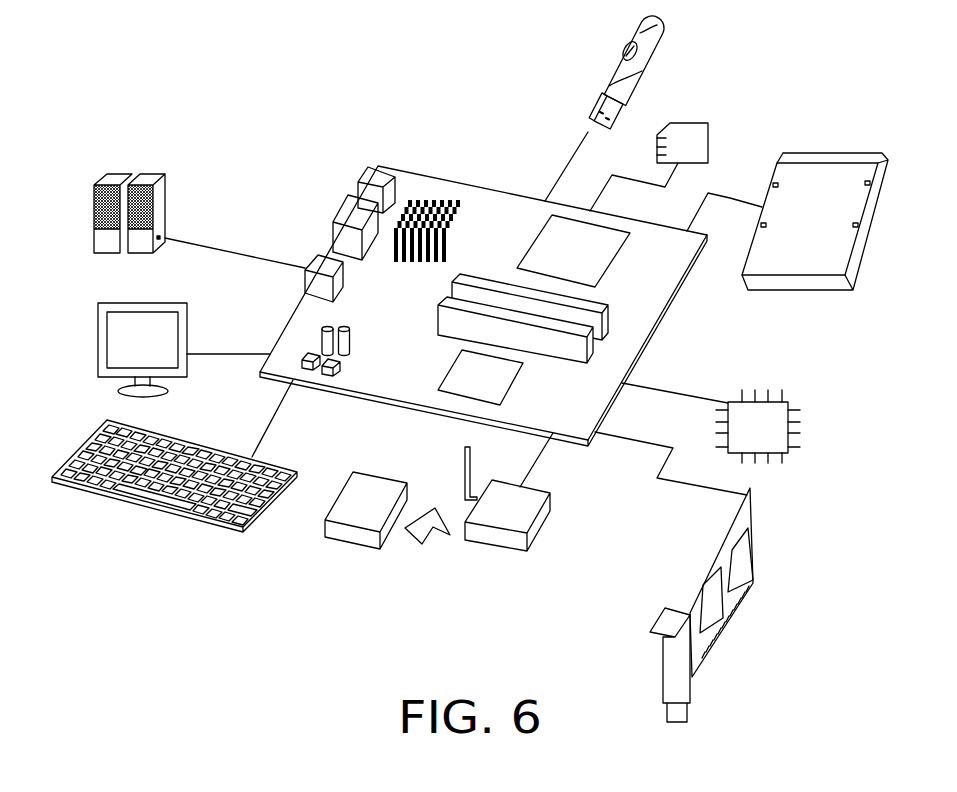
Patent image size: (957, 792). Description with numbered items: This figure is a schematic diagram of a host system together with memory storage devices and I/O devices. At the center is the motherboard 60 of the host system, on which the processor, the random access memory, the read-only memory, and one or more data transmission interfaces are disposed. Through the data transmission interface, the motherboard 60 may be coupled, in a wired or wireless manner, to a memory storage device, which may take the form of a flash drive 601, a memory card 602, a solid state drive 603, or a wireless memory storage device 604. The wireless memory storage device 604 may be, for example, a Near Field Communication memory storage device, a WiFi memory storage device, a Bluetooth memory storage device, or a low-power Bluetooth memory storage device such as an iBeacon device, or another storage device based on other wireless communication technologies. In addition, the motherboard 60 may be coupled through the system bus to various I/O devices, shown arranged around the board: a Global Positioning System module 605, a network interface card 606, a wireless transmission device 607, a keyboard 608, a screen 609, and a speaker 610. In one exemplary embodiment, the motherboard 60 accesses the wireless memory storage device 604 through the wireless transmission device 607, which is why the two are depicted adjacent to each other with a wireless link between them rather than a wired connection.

The motherboard 60 is at (485, 210).
The flash drive 601 is at (606, 62).
The memory card 602 is at (708, 133).
The solid state drive 603 is at (832, 153).
The wireless memory storage device 604 is at (337, 487).
The Global Positioning System (GPS) module 605 is at (800, 418).
The network interface card 606 is at (758, 550).
The wireless transmission device 607 is at (548, 532).
The keyboard 608 is at (194, 520).
The screen 609 is at (97, 358).
The speaker 610 is at (93, 240).